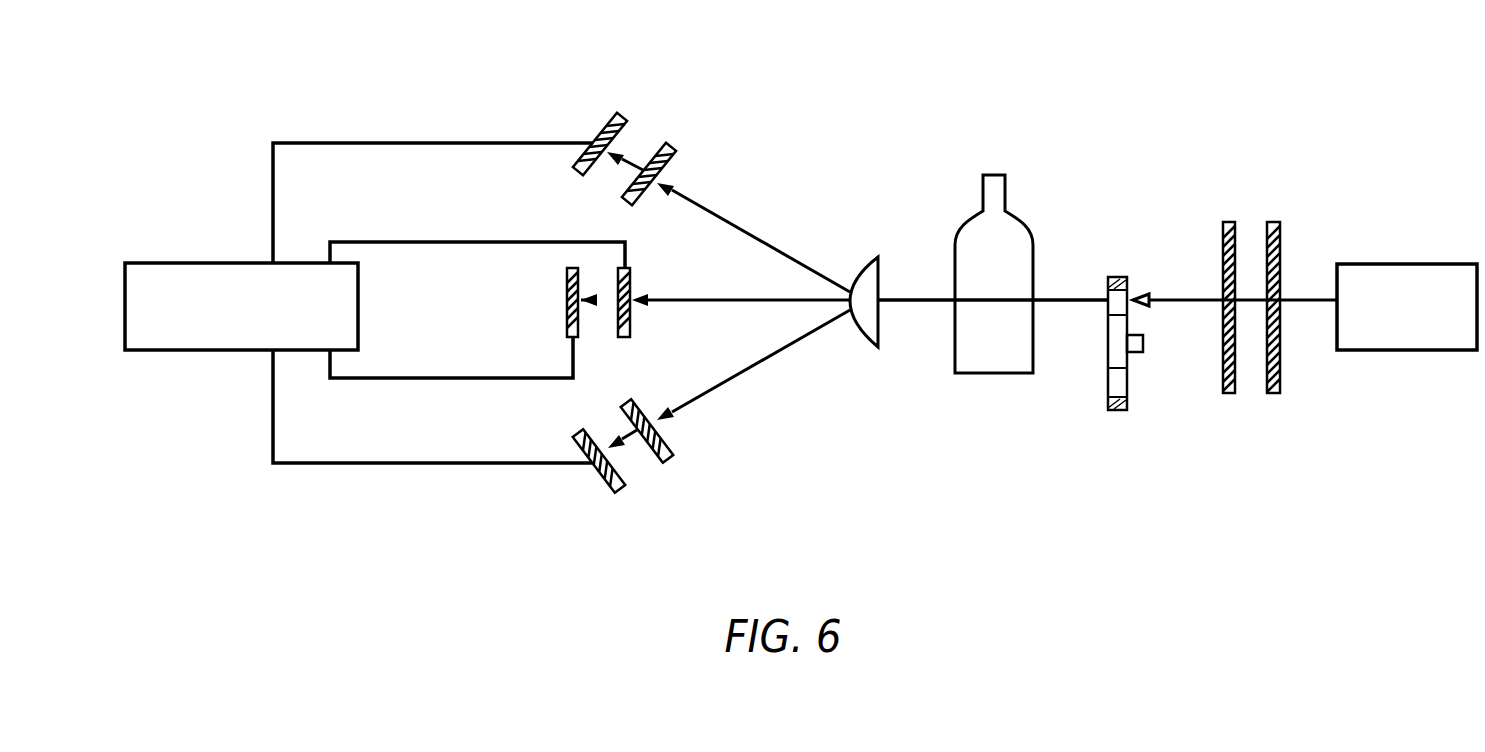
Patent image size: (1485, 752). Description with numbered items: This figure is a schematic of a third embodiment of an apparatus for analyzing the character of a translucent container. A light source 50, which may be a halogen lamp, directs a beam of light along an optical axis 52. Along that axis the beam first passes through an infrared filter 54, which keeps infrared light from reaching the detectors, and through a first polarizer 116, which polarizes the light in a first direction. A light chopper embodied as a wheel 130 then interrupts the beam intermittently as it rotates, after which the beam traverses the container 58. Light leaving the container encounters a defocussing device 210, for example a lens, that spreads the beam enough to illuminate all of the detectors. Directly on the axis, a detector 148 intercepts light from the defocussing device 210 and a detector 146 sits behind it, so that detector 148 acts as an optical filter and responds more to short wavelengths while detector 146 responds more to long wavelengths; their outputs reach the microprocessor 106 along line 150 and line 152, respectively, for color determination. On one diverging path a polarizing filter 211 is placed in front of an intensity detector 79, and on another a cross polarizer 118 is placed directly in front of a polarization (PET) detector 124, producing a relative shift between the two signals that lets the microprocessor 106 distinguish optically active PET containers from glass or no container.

The light source 50 is at (1418, 262).
The optical axis 52 is at (1067, 298).
The infrared filter 54 is at (1275, 218).
The container 58 is at (995, 172).
The intensity detector 79 is at (612, 112).
The microprocessor 106 is at (158, 262).
The first polarizer 116 is at (1228, 396).
The cross polarizer 118 is at (668, 462).
The polarization (PET) detector 124 is at (608, 493).
The wheel 130 is at (1115, 412).
The detector 146 is at (565, 280).
The detector 148 is at (633, 320).
The line 150 is at (432, 377).
The line 152 is at (388, 240).
The defocussing device 210 is at (872, 350).
The polarizing filter 211 is at (665, 142).